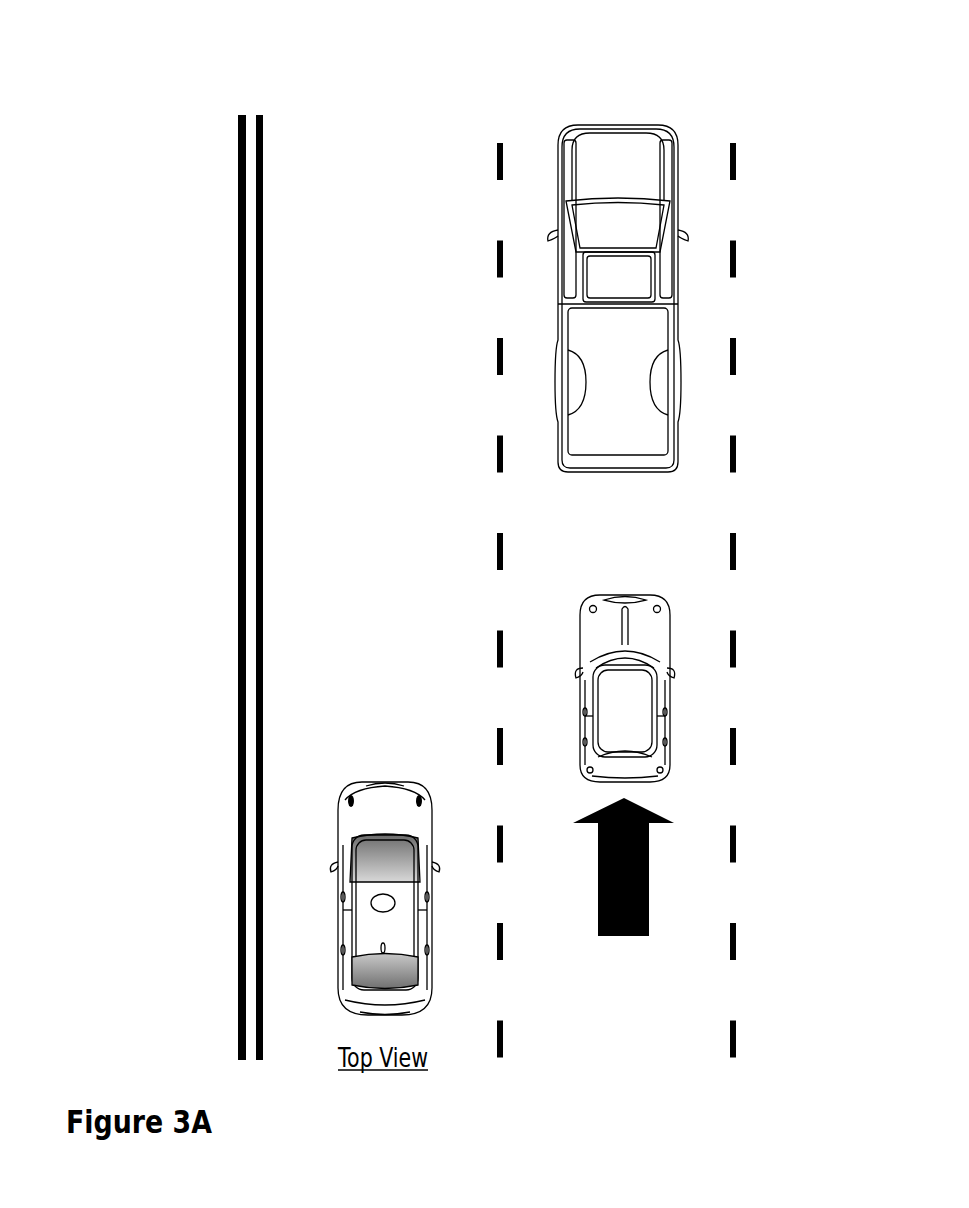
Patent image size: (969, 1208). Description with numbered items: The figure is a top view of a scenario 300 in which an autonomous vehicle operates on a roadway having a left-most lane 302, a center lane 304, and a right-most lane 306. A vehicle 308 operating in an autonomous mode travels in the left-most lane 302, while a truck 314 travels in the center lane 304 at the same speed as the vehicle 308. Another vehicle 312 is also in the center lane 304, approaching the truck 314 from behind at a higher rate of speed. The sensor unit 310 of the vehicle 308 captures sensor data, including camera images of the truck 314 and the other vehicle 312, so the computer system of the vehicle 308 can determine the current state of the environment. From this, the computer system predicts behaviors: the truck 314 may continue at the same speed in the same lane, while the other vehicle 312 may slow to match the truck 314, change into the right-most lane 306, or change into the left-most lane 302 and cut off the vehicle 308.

The scenario 300 is at (190, 90).
The left-most lane 302 is at (376, 72).
The center lane 304 is at (612, 72).
The right-most lane 306 is at (822, 70).
The vehicle 308 is at (356, 898).
The sensor unit 310 is at (371, 911).
The other vehicle 312 is at (592, 598).
The truck 314 is at (574, 131).